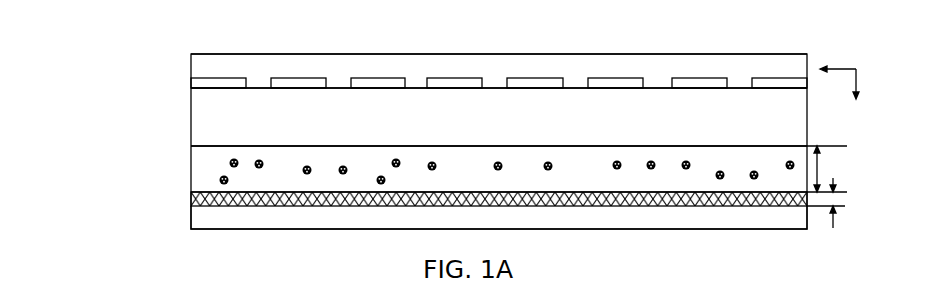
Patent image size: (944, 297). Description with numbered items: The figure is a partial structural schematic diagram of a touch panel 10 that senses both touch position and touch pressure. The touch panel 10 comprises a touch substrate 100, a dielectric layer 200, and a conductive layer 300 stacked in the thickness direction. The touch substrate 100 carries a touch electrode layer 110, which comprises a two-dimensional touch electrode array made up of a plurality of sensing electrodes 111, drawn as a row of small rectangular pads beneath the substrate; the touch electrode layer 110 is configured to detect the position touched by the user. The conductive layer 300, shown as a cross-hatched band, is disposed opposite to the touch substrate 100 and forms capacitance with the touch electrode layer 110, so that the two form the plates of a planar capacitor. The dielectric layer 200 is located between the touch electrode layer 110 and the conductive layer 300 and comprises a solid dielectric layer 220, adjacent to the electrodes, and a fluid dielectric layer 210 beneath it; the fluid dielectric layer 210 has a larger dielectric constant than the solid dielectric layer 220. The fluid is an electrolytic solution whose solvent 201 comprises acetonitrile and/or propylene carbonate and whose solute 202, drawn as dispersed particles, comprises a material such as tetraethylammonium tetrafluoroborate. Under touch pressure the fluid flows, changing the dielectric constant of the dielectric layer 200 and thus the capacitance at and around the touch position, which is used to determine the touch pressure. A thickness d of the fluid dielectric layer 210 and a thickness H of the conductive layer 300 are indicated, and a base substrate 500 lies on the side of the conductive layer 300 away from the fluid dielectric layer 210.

The touch panel 10 is at (455, 122).
The touch substrate 100 is at (236, 65).
The touch electrode layer 110 is at (446, 60).
The sensing electrodes 111 is at (210, 84).
The dielectric layer 200 is at (440, 136).
The solid dielectric layer 220 is at (229, 98).
The fluid dielectric layer 210 is at (440, 157).
The solvent 201 is at (252, 176).
The solute 202 is at (230, 160).
The conductive layer 300 is at (227, 197).
The base substrate 500 is at (228, 219).